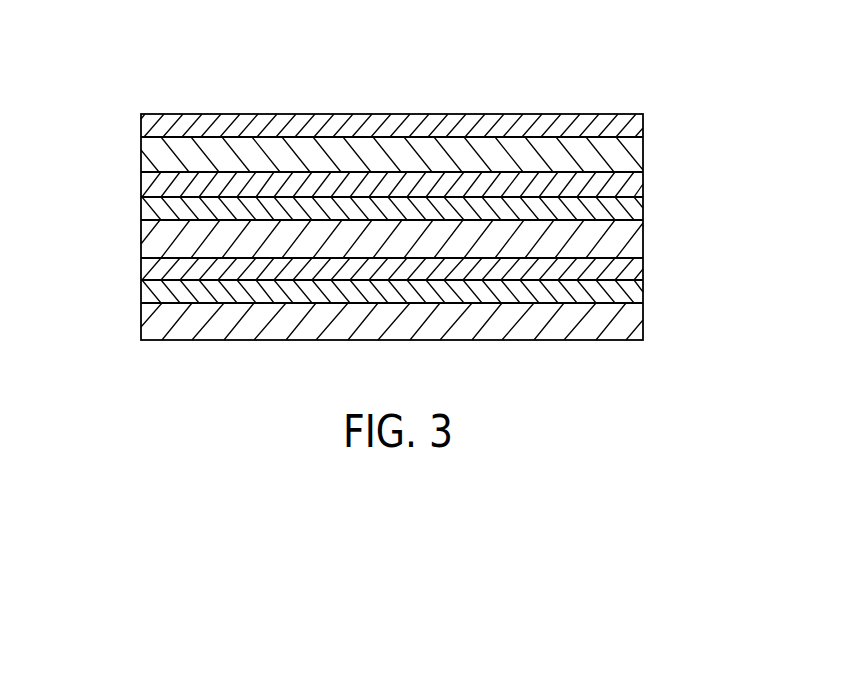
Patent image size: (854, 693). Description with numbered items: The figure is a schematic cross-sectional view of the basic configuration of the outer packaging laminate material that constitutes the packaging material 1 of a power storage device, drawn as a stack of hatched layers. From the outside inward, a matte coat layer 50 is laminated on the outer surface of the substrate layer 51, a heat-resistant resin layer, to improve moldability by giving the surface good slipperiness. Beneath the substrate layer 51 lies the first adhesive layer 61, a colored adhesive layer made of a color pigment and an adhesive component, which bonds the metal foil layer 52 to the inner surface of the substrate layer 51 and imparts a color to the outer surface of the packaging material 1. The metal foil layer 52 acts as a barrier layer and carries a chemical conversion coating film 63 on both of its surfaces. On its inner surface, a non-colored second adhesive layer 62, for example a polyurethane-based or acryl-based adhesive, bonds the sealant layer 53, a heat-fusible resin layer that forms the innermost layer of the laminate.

The packaging material 1 is at (557, 79).
The matte coat layer 50 is at (378, 125).
The substrate layer 51 is at (625, 160).
The metal foil layer 52 is at (633, 245).
The sealant layer 53 is at (630, 315).
The first adhesive layer 61 is at (147, 187).
The second adhesive layer 62 is at (147, 292).
The chemical conversion coating film 63 is at (147, 212).